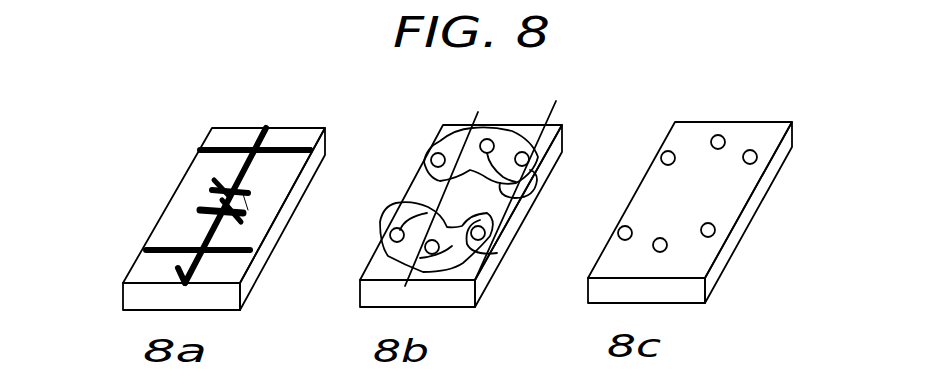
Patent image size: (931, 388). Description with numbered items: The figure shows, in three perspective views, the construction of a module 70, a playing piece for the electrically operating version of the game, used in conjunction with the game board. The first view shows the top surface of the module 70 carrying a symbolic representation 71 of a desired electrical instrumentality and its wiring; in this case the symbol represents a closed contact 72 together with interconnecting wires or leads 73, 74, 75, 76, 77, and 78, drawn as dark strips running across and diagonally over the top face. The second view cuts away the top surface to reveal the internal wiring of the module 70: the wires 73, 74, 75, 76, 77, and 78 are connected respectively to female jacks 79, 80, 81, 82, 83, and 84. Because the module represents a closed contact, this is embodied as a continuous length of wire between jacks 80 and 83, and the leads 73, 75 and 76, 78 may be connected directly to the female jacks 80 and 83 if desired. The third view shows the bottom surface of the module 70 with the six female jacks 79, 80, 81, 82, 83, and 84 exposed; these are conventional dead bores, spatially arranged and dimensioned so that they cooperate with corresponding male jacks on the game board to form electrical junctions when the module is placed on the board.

The module 70 is at (180, 160).
The symbolic representation 71 is at (193, 188).
The closed contact 72 is at (252, 204).
The wire 73 is at (213, 144).
The wire 74 is at (287, 103).
The wire 75 is at (310, 143).
The wire 76 is at (227, 257).
The wire 77 is at (183, 265).
The wire 78 is at (138, 256).
The female jack 79 is at (433, 153).
The female jack 80 is at (485, 139).
The female jack 81 is at (662, 154).
The female jack 82 is at (618, 232).
The female jack 83 is at (405, 286).
The female jack 84 is at (391, 229).